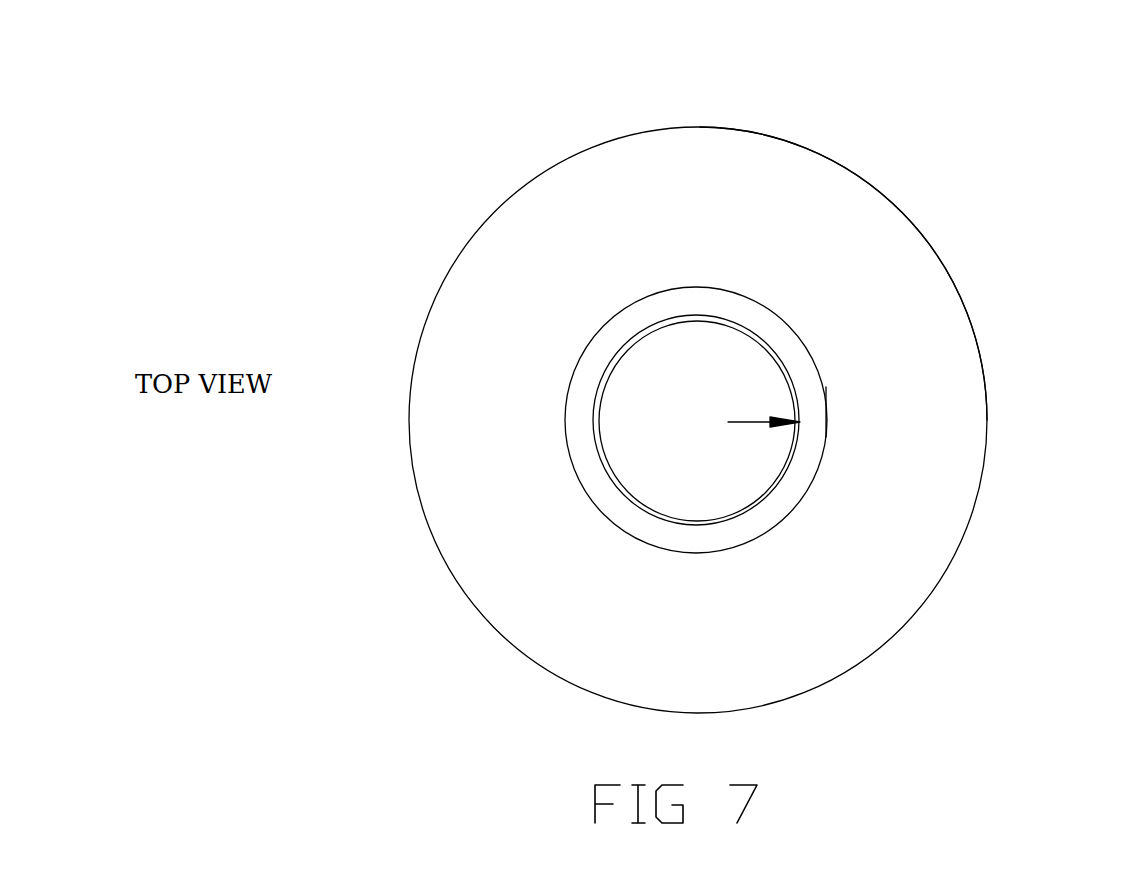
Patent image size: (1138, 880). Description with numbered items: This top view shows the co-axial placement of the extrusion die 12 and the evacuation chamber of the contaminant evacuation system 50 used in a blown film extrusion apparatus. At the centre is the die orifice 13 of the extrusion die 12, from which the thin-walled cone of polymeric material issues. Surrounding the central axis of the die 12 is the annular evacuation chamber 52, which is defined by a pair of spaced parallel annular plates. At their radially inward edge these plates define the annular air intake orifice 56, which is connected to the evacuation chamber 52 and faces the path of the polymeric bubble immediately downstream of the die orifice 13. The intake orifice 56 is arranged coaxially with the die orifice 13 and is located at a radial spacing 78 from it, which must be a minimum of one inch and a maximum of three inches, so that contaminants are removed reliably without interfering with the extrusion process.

The extrusion die 12 is at (664, 341).
The die orifice 13 is at (567, 375).
The contaminant evacuation system 50 is at (406, 556).
The annular evacuation chamber 52 is at (947, 325).
The air intake orifice 56 is at (785, 287).
The radial spacing 78 is at (1098, 603).